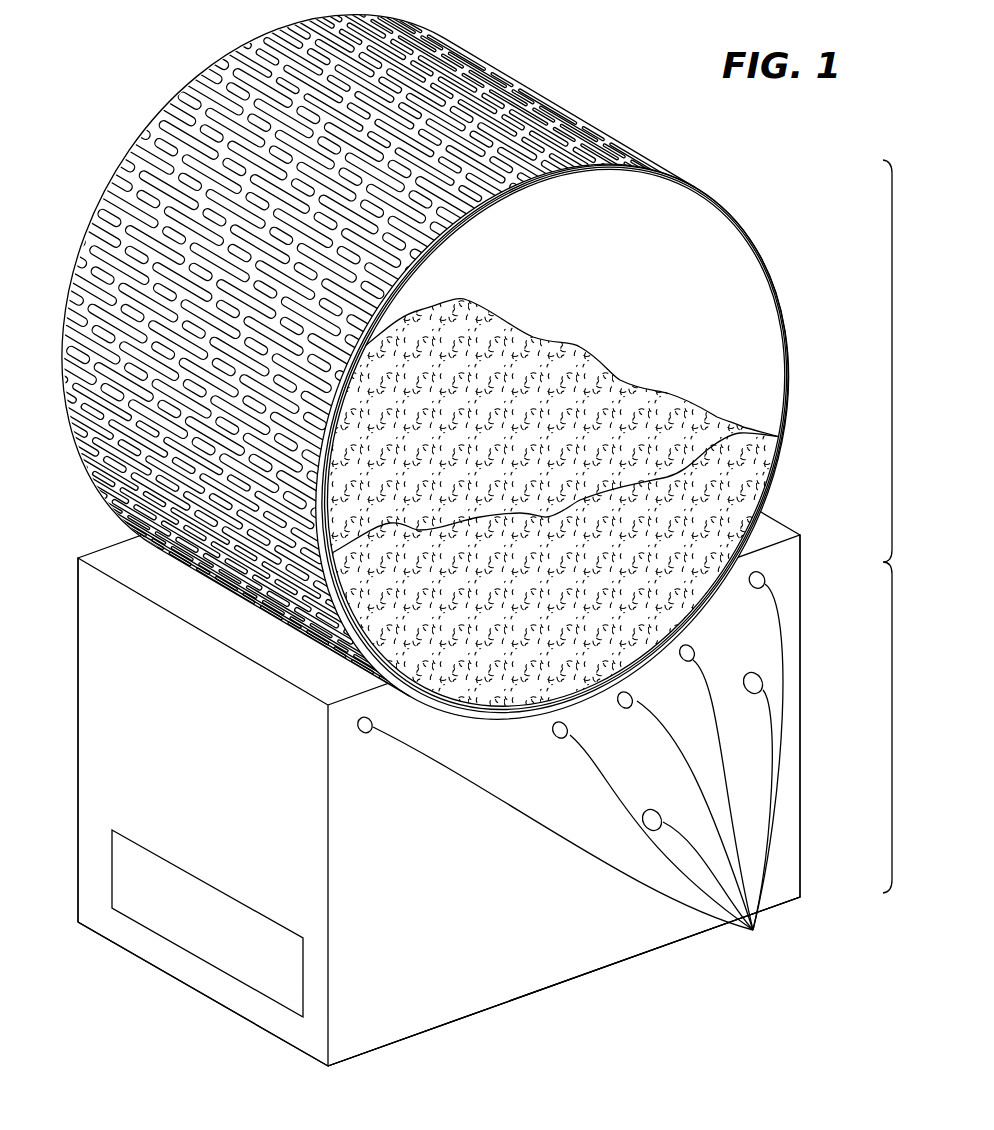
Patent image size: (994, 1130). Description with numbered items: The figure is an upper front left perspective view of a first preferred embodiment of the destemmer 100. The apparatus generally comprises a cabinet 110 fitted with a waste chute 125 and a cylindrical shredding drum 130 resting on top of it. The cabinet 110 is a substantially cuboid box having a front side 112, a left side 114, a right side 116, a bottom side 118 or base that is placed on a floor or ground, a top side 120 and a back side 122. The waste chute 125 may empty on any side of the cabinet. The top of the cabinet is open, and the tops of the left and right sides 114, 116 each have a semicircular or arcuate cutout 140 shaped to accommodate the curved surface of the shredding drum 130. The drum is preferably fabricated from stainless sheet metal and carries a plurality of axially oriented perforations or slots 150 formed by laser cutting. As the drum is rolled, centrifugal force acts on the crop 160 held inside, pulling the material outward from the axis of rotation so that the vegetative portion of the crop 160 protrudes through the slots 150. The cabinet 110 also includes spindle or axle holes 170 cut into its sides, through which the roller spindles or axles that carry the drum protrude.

The destemmer 100 is at (866, 526).
The cabinet 110 is at (466, 1012).
The front side 112 is at (338, 1012).
The left side 114 is at (93, 772).
The right side 116 is at (802, 761).
The bottom side 118 is at (600, 982).
The top side 120 is at (113, 563).
The back side 122 is at (78, 654).
The waste chute 125 is at (258, 972).
The shredding drum 130 is at (440, 401).
The arcuate cutout 140 is at (730, 582).
The slots 150 is at (150, 482).
The crop 160 is at (770, 482).
The axle holes 170 is at (581, 757).